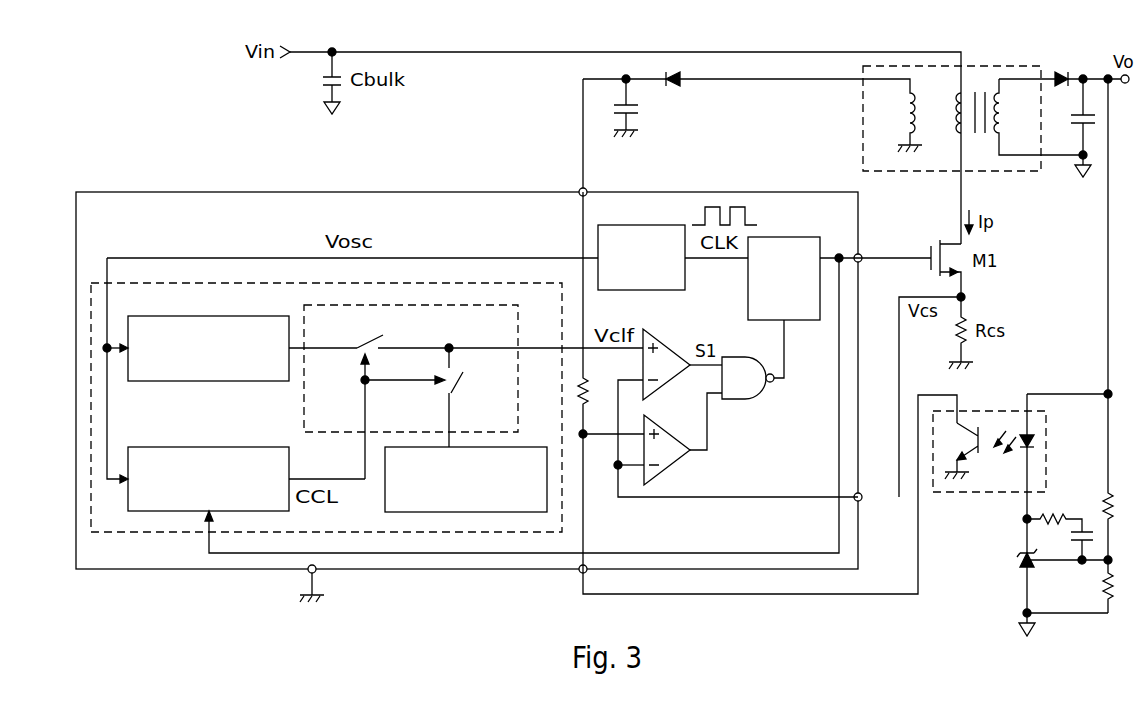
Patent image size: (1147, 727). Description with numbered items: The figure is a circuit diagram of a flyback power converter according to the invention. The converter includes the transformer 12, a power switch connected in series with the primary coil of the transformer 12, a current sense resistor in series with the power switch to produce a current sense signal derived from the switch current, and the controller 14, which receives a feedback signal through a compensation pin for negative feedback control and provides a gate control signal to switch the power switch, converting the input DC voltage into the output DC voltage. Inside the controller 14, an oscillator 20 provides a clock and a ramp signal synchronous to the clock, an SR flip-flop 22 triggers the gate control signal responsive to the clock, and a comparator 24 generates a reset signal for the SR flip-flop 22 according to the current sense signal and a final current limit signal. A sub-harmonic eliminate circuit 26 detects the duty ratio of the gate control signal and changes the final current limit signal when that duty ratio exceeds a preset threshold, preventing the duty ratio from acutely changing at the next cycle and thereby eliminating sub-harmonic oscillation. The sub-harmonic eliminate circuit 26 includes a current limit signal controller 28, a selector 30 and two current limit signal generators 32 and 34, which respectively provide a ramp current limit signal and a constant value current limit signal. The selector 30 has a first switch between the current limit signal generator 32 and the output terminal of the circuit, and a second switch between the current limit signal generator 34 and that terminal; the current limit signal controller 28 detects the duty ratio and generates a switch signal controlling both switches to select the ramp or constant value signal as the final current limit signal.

The transformer 12 is at (863, 120).
The controller 14 is at (728, 192).
The oscillator 20 is at (685, 283).
The SR flip-flop 22 is at (796, 322).
The comparator 24 is at (672, 347).
The sub-harmonic eliminate circuit 26 is at (225, 283).
The current limit signal controller 28 is at (223, 447).
The selector 30 is at (304, 397).
The current limit signal generator 32 is at (178, 381).
The current limit signal generator 34 is at (385, 495).